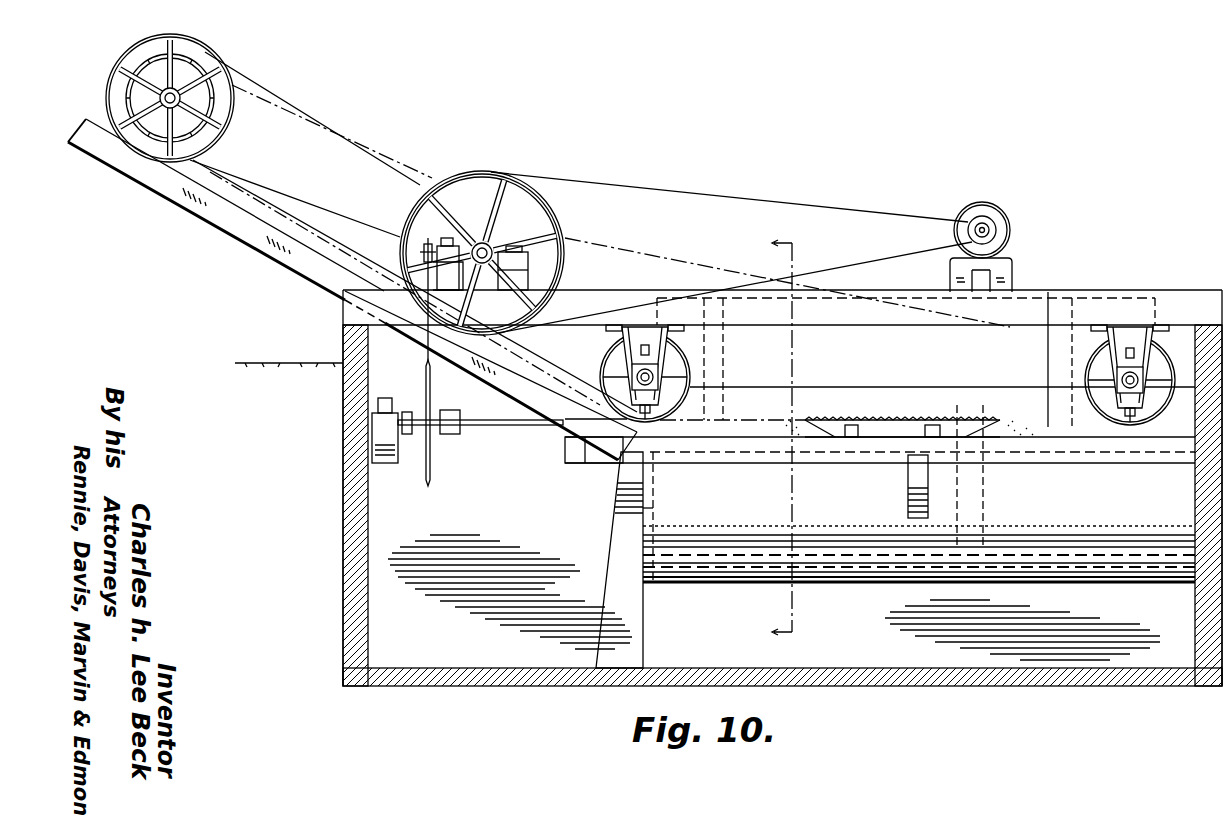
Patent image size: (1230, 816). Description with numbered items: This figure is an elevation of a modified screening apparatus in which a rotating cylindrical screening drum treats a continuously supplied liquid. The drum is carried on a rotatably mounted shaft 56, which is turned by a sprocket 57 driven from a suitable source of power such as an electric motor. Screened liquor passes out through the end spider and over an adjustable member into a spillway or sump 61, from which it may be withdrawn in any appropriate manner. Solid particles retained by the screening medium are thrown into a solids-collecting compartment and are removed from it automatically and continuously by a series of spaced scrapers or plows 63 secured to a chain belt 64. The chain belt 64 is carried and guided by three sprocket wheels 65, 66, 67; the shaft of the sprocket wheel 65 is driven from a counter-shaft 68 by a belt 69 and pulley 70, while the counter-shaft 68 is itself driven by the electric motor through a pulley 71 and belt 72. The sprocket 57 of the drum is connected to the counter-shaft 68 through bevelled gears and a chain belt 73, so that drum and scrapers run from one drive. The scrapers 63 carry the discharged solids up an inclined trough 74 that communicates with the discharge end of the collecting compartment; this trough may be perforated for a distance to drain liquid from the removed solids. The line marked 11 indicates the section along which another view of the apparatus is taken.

The section line 11 is at (796, 441).
The shaft 56 is at (525, 420).
The sprocket 57 is at (433, 478).
The spillway or sump 61 is at (468, 642).
The scrapers or plows 63 is at (855, 420).
The chain belt 64 is at (607, 262).
The sprocket wheel 65 is at (217, 103).
The sprocket wheel 66 is at (690, 362).
The sprocket wheel 67 is at (1177, 357).
The counter-shaft 68 is at (482, 244).
The belt 69 is at (362, 157).
The pulley 70 is at (226, 132).
The pulley 71 is at (563, 188).
The belt 72 is at (762, 198).
The chain belt 73 is at (428, 343).
The inclined trough 74 is at (332, 250).